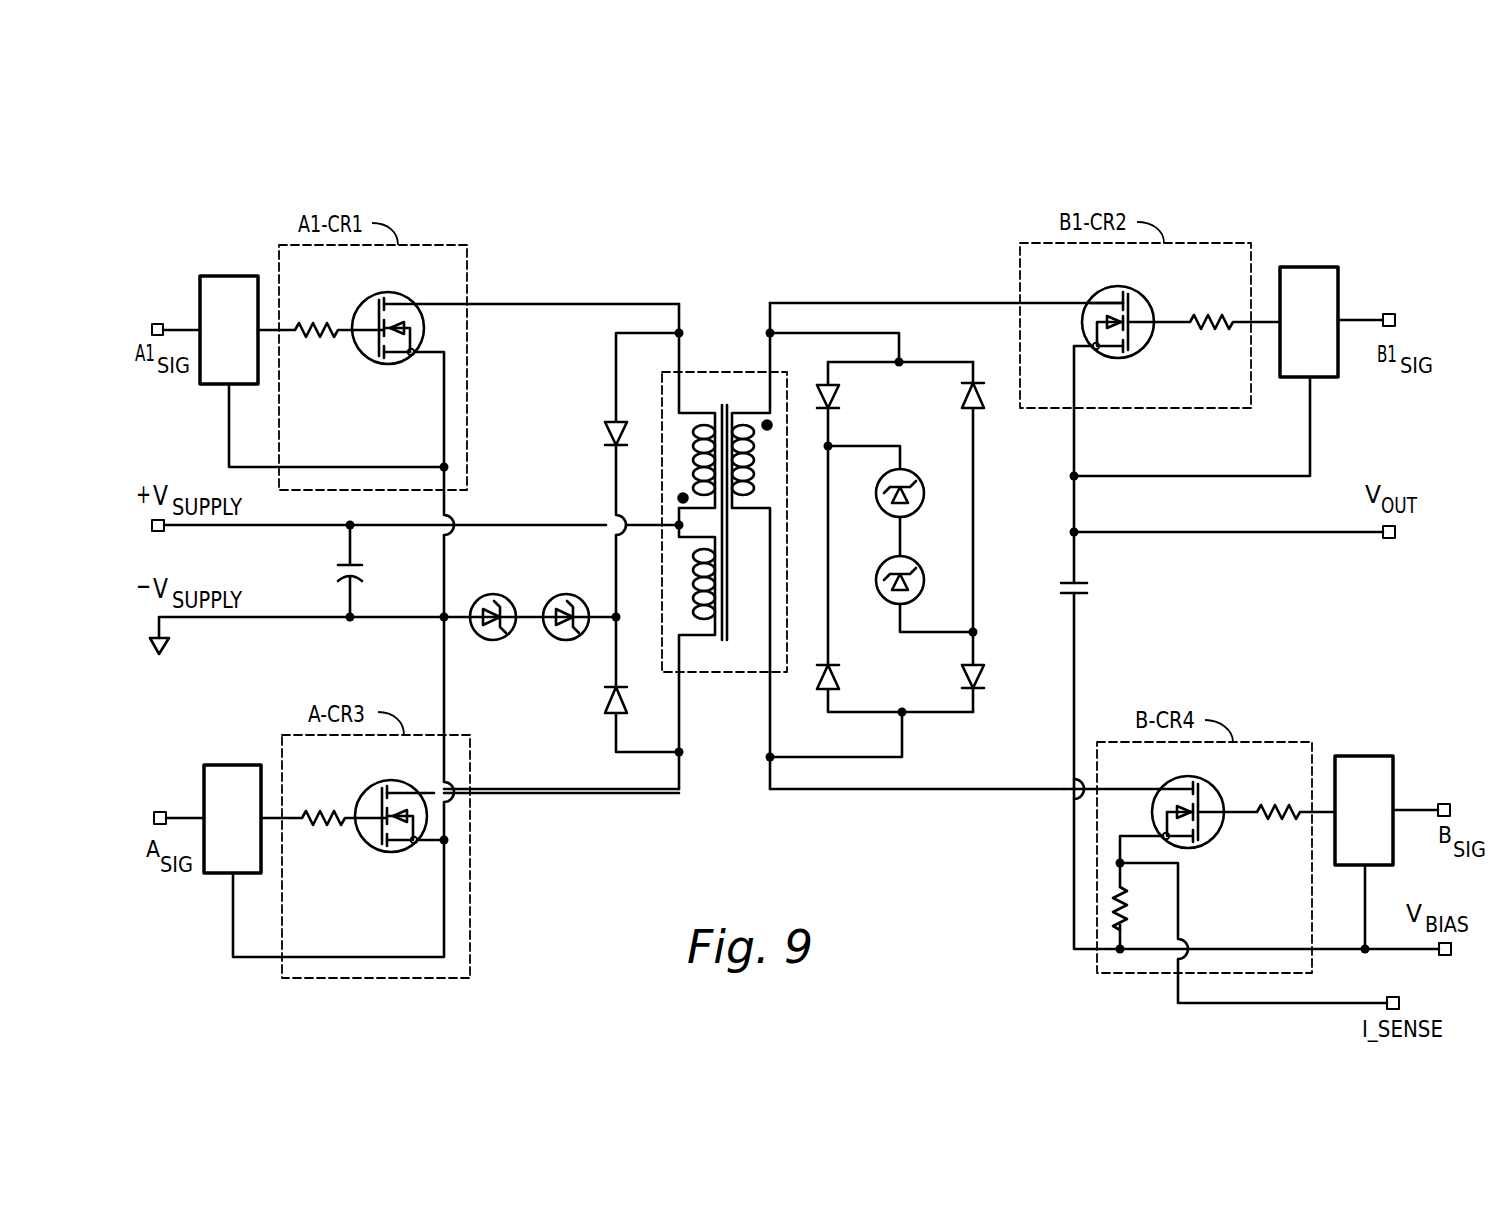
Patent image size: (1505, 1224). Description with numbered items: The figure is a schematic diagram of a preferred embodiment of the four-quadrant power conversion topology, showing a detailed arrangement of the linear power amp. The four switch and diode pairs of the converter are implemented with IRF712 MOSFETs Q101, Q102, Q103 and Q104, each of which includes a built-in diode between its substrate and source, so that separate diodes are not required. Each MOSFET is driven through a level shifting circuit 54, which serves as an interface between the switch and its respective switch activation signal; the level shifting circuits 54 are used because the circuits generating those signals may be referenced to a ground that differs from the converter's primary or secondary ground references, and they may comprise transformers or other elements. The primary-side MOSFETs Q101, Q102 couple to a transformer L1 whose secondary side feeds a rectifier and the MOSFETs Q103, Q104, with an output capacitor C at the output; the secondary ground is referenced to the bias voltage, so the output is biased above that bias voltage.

The level shifting circuit 54 is at (231, 276).
The MOSFET Q101 is at (388, 344).
The MOSFET Q102 is at (391, 833).
The MOSFET Q103 is at (1118, 338).
The MOSFET Q104 is at (1198, 826).
The transformer L1 is at (718, 372).
The output capacitor C is at (1083, 591).